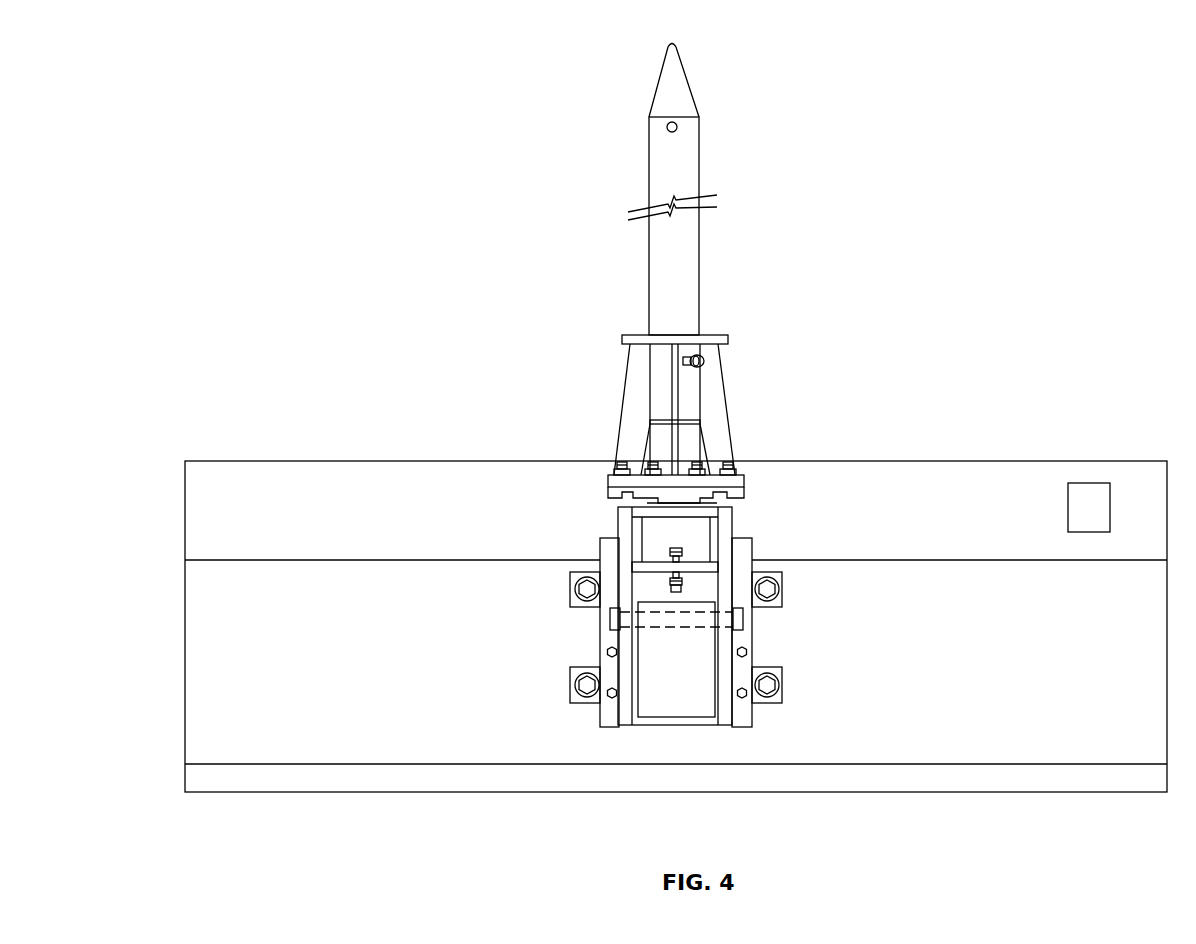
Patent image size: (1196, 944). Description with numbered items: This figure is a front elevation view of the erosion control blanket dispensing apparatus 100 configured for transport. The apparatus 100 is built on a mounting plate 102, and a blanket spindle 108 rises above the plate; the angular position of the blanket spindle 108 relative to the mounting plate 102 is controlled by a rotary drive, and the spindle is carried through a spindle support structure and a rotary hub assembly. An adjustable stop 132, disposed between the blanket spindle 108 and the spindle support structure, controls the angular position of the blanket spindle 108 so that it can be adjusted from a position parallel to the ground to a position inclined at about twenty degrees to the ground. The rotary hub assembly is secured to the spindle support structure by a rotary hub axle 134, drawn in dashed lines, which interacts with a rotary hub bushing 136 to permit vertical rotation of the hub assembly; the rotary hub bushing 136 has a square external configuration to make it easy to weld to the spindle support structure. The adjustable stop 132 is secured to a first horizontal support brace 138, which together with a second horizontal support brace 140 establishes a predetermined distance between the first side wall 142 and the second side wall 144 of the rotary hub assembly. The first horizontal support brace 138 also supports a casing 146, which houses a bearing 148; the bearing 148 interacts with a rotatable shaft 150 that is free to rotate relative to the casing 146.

The apparatus 100 is at (775, 62).
The mounting plate 102 is at (946, 487).
The blanket spindle 108 is at (670, 180).
The adjustable stop 132 is at (677, 495).
The rotary hub axle 134 is at (648, 628).
The rotary hub bushing 136 is at (700, 635).
The first horizontal support brace 138 is at (703, 570).
The second horizontal support brace 140 is at (713, 512).
The first side wall 142 is at (726, 677).
The second side wall 144 is at (612, 557).
The casing 146 is at (657, 530).
The bearing 148 is at (652, 505).
The rotatable shaft 150 is at (680, 545).